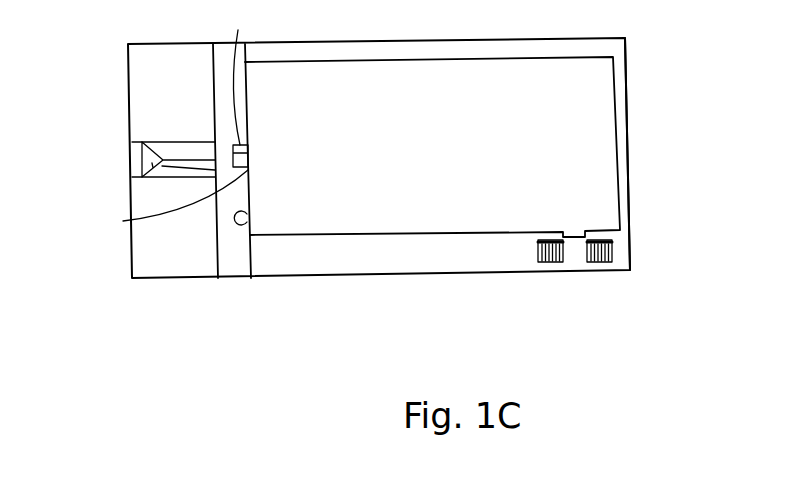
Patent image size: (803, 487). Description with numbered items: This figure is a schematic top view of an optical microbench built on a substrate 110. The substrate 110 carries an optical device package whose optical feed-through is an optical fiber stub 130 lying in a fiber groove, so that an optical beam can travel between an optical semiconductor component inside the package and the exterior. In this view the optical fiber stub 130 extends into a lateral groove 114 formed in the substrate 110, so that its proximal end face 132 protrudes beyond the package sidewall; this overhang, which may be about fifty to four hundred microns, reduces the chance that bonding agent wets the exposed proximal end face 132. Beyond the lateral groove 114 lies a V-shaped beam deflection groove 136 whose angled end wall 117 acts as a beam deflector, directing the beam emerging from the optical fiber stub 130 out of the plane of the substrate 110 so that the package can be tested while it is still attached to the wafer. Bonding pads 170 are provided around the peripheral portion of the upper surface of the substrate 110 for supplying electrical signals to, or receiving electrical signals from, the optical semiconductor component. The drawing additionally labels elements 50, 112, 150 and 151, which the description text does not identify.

The optical fiber 50 is at (161, 208).
The substrate 110 is at (380, 267).
The side wall 112 is at (632, 165).
The lateral groove 114 is at (230, 266).
The end wall 117 is at (143, 175).
The optical fiber stub 130 is at (242, 72).
The proximal end face 132 is at (232, 147).
The beam deflection groove 136 is at (193, 148).
The circuit board 150 is at (523, 146).
The aperture 151 is at (251, 220).
The bonding pads 170 is at (552, 262).